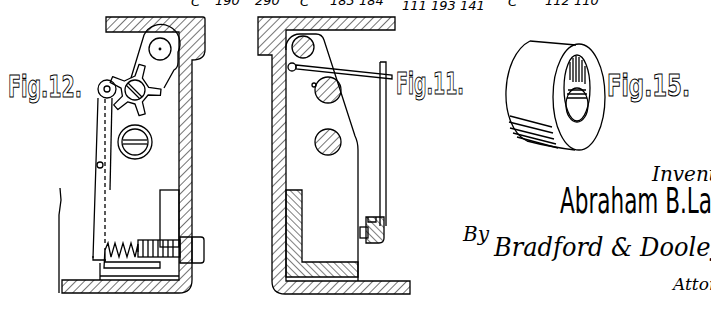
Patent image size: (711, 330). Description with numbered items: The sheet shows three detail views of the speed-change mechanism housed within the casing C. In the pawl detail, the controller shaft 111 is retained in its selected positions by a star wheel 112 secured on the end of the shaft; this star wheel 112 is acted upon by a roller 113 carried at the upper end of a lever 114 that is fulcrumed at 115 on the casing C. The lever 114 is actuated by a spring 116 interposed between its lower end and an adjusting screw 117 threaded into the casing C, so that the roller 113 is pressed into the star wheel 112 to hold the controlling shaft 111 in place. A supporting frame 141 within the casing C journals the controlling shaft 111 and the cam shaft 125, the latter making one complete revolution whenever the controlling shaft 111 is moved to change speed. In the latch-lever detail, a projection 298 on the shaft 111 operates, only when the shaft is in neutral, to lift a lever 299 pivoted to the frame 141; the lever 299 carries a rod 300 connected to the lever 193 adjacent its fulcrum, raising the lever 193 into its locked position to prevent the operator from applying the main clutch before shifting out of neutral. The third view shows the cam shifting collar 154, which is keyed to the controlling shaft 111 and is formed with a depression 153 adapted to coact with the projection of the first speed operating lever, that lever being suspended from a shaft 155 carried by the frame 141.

In FIG. 12, the shaft 155 is at (166, 50).
In FIG. 11, the shaft 155 is at (296, 50).
In FIG. 12, the casing C is at (190, 87).
In FIG. 11, the casing C is at (275, 107).
In FIG. 12, the star wheel 112 is at (150, 92).
In FIG. 12, the roller 113 is at (104, 81).
In FIG. 12, the lever 114 is at (100, 127).
In FIG. 12, the fulcrum 115 is at (98, 164).
In FIG. 12, the supporting frame 141 is at (162, 182).
In FIG. 11, the supporting frame 141 is at (348, 255).
In FIG. 12, the spring 116 is at (123, 248).
In FIG. 12, the adjusting screw 117 is at (186, 246).
In FIG. 11, the lever 299 is at (358, 76).
In FIG. 11, the projection 298 is at (313, 86).
In FIG. 11, the controlling shaft 111 is at (327, 87).
In FIG. 11, the cam shaft 125 is at (328, 155).
In FIG. 11, the rod 300 is at (385, 146).
In FIG. 11, the lever 193 is at (388, 224).
In FIG. 15, the depression 153 is at (578, 58).
In FIG. 15, the collar 154 is at (520, 114).